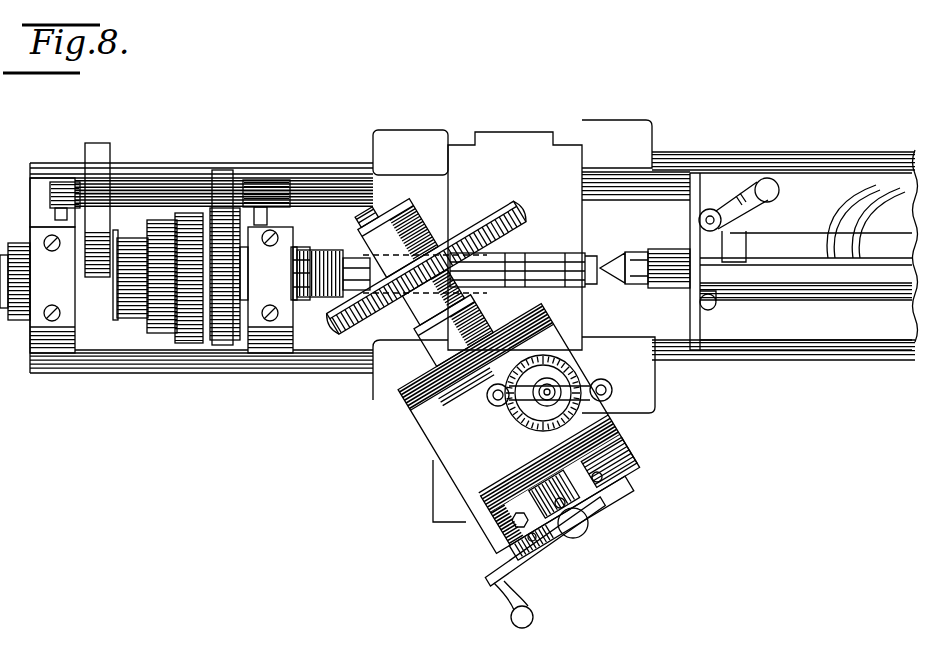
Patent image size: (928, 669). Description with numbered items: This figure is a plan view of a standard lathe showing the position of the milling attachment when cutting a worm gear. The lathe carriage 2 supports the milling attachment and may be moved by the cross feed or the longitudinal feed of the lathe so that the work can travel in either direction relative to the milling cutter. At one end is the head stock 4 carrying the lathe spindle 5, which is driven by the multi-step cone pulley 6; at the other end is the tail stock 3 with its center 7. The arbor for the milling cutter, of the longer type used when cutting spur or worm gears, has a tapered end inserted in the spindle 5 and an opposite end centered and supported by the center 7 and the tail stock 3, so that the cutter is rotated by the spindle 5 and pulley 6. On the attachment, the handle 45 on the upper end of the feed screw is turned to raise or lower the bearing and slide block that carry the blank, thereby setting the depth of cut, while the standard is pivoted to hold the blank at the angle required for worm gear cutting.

The lathe carriage 2 is at (514, 266).
The tail stock 3 is at (801, 261).
The head stock 4 is at (258, 186).
The lathe spindle 5 is at (318, 254).
The multi-step cone pulley 6 is at (165, 332).
The center 7 is at (631, 262).
The handle 45 is at (517, 411).